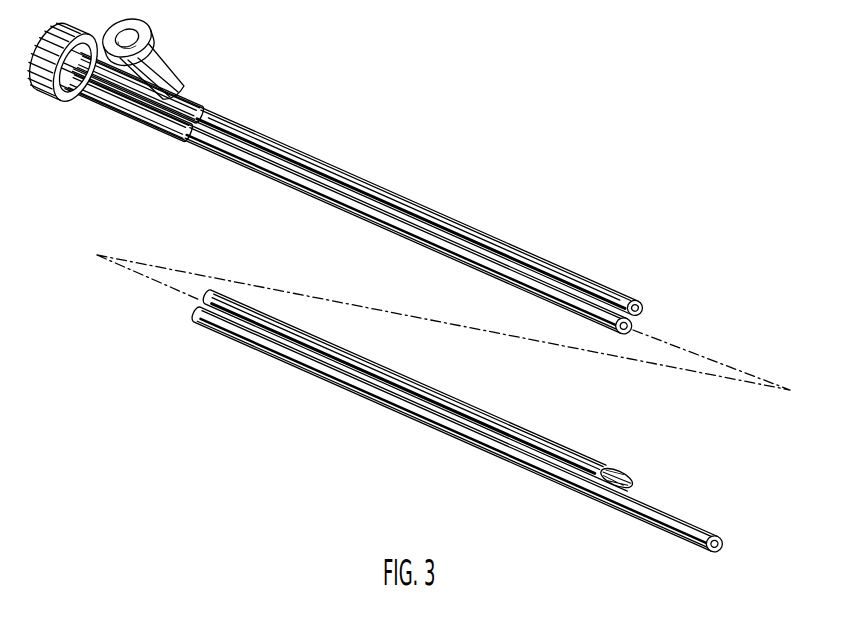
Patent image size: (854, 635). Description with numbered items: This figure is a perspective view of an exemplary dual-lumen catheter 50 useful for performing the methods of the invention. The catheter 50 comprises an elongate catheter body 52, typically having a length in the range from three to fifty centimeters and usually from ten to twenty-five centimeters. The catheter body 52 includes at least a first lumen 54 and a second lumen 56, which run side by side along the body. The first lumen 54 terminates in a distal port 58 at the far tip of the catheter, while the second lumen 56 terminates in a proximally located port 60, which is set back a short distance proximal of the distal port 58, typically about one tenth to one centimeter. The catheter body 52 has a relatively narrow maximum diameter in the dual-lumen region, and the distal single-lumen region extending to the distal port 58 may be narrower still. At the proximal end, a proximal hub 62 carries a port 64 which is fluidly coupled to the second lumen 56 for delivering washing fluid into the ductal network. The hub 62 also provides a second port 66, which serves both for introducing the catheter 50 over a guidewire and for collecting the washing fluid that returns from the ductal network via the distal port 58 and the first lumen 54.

The catheter 50 is at (478, 146).
The catheter body 52 is at (340, 198).
The first lumen 54 is at (643, 307).
The second lumen 56 is at (634, 328).
The distal port 58 is at (726, 544).
The proximally located port 60 is at (588, 457).
The proximal hub 62 is at (145, 103).
The port 64 is at (157, 70).
The second port 66 is at (87, 80).